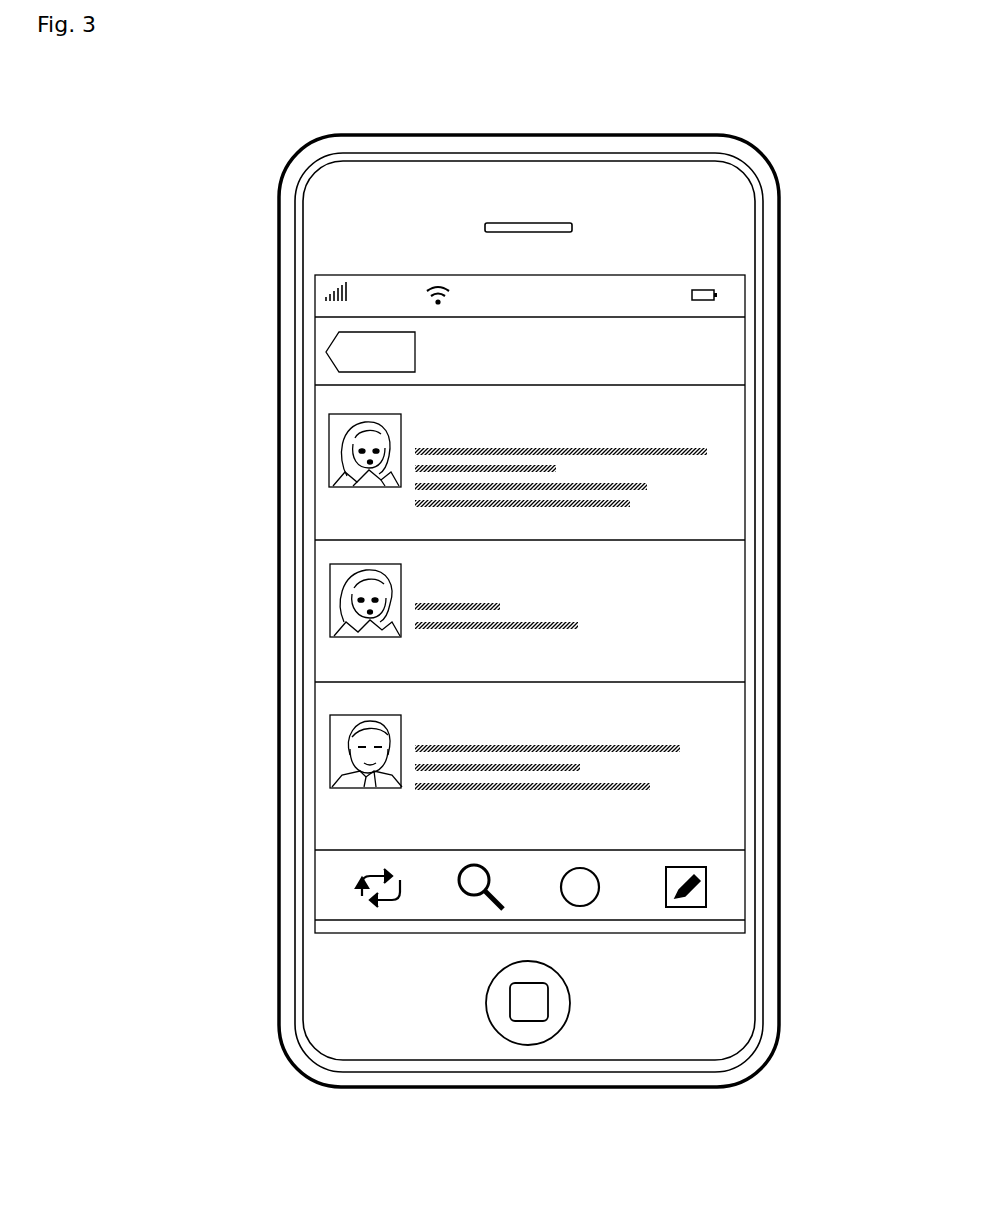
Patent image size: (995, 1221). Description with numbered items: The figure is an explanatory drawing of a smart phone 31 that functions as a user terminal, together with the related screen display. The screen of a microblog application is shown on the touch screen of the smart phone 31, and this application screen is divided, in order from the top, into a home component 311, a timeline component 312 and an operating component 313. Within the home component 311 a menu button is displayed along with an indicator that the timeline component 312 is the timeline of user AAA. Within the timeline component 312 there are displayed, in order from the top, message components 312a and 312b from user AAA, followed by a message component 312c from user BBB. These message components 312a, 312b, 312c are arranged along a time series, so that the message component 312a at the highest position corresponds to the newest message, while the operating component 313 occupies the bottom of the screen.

The smart phone 31 is at (428, 101).
The home component 311 is at (794, 286).
The timeline component 312 is at (794, 844).
The message component 312a is at (274, 392).
The message component 312b is at (274, 546).
The message component 312c is at (274, 693).
The operating component 313 is at (794, 852).